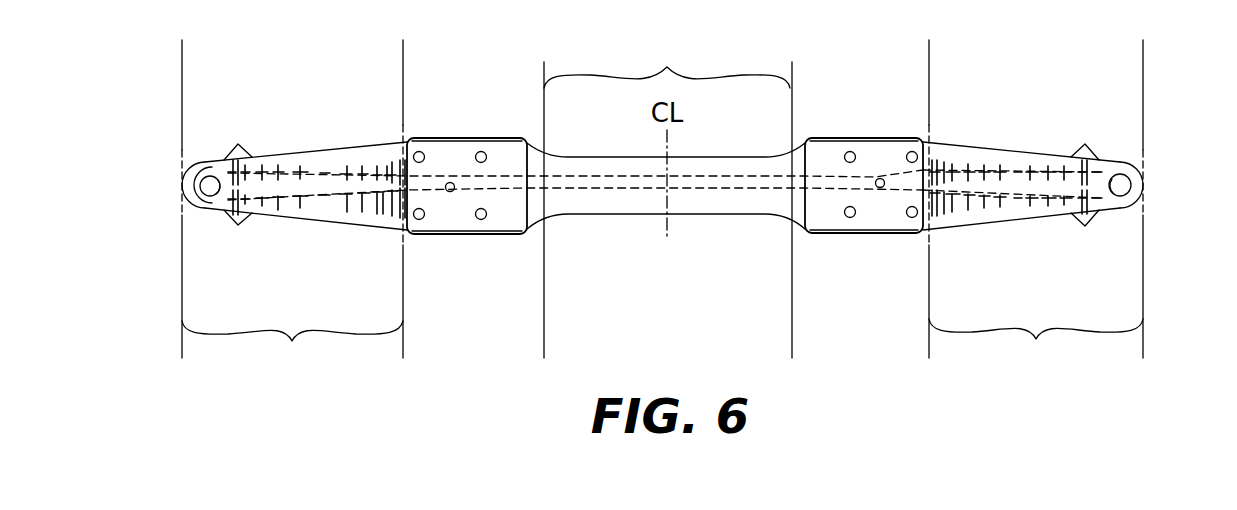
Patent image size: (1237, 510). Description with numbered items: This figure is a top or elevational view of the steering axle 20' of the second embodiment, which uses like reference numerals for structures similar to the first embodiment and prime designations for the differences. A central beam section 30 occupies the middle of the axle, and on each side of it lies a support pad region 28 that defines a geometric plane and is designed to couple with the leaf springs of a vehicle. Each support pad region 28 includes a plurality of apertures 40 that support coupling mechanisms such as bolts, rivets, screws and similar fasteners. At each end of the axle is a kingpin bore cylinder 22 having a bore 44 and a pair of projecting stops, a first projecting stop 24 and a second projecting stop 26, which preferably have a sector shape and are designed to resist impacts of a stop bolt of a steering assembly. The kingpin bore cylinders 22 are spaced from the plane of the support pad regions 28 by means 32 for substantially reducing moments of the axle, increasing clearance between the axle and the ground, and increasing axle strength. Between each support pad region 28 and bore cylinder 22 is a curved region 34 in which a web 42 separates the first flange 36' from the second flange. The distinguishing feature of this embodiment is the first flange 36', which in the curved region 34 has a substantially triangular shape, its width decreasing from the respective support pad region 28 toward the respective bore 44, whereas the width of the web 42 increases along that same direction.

The steering axle 20' is at (662, 126).
The kingpin bore cylinder 22 is at (183, 181).
The first projecting stop 24 is at (240, 222).
The second projecting stop 26 is at (240, 147).
The support pad region 28 is at (455, 138).
The central beam section 30 is at (667, 60).
The means for substantially reducing moments 32 is at (662, 347).
The curved region 34 is at (322, 168).
The first flange 36' is at (665, 239).
The apertures 40 is at (481, 220).
The web 42 is at (600, 192).
The bore 44 is at (213, 197).